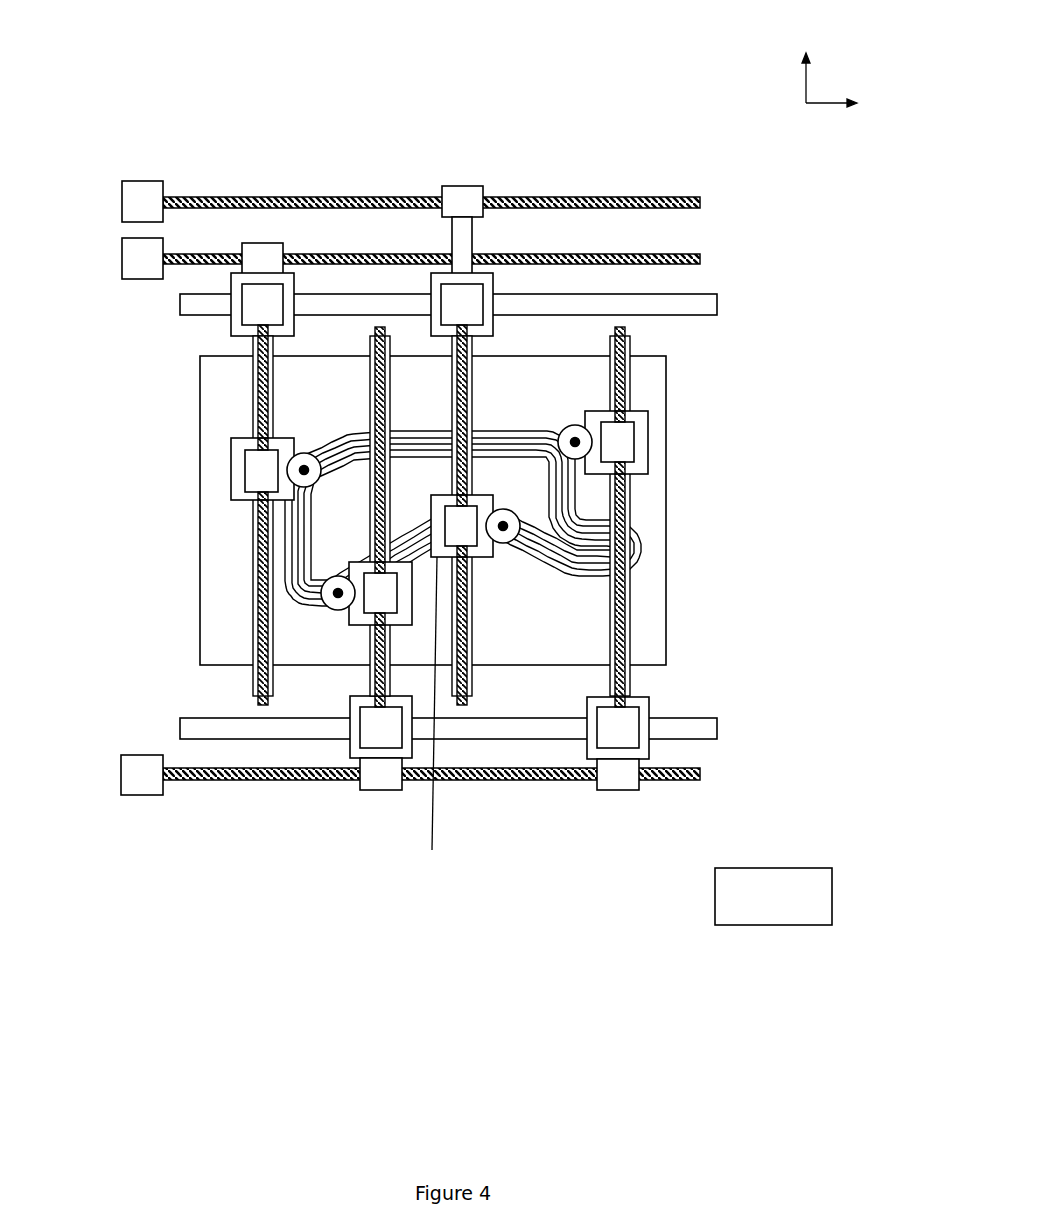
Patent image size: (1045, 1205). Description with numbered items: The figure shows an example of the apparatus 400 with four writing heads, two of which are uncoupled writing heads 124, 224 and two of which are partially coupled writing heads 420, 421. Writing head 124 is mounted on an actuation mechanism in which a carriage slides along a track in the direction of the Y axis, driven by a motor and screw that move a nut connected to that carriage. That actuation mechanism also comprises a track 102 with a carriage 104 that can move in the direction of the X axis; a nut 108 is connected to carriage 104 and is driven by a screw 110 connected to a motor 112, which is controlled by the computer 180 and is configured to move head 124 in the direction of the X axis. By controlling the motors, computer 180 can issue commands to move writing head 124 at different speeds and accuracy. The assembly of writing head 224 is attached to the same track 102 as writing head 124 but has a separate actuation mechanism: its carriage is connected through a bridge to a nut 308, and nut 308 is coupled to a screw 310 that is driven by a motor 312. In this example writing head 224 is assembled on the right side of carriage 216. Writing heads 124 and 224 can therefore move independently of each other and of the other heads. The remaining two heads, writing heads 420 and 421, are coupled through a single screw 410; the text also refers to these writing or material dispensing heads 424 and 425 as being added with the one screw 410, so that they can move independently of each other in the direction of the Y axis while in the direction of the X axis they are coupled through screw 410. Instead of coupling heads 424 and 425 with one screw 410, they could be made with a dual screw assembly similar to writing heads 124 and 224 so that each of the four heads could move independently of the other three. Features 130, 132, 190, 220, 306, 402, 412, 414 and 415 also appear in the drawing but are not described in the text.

The positioning system 400 is at (172, 77).
The track 102 is at (693, 305).
The carriage 104 is at (291, 283).
The nut 108 is at (262, 247).
The screw 110 is at (690, 251).
The motor 112 is at (123, 267).
The writing head 124 is at (308, 456).
The substrate 130 is at (667, 392).
The flexible cable 132 is at (580, 591).
The computer 180 is at (732, 893).
The coordinate system 190 is at (793, 100).
The carriage 216 is at (410, 708).
The stage block 220 is at (460, 305).
The writing head 224 is at (513, 523).
The shaft 306 is at (460, 250).
The nut 308 is at (460, 198).
The screw 310 is at (243, 200).
The motor 312 is at (143, 198).
The guide rail 402 is at (701, 729).
The screw 410 is at (699, 777).
The motor 412 is at (140, 782).
The vertical rail 414 is at (369, 648).
The vertical rail 415 is at (630, 678).
The writing head 420 is at (372, 730).
The writing head 421 is at (612, 733).
The writing or material dispensing head 424 is at (333, 598).
The writing or material dispensing head 425 is at (575, 452).